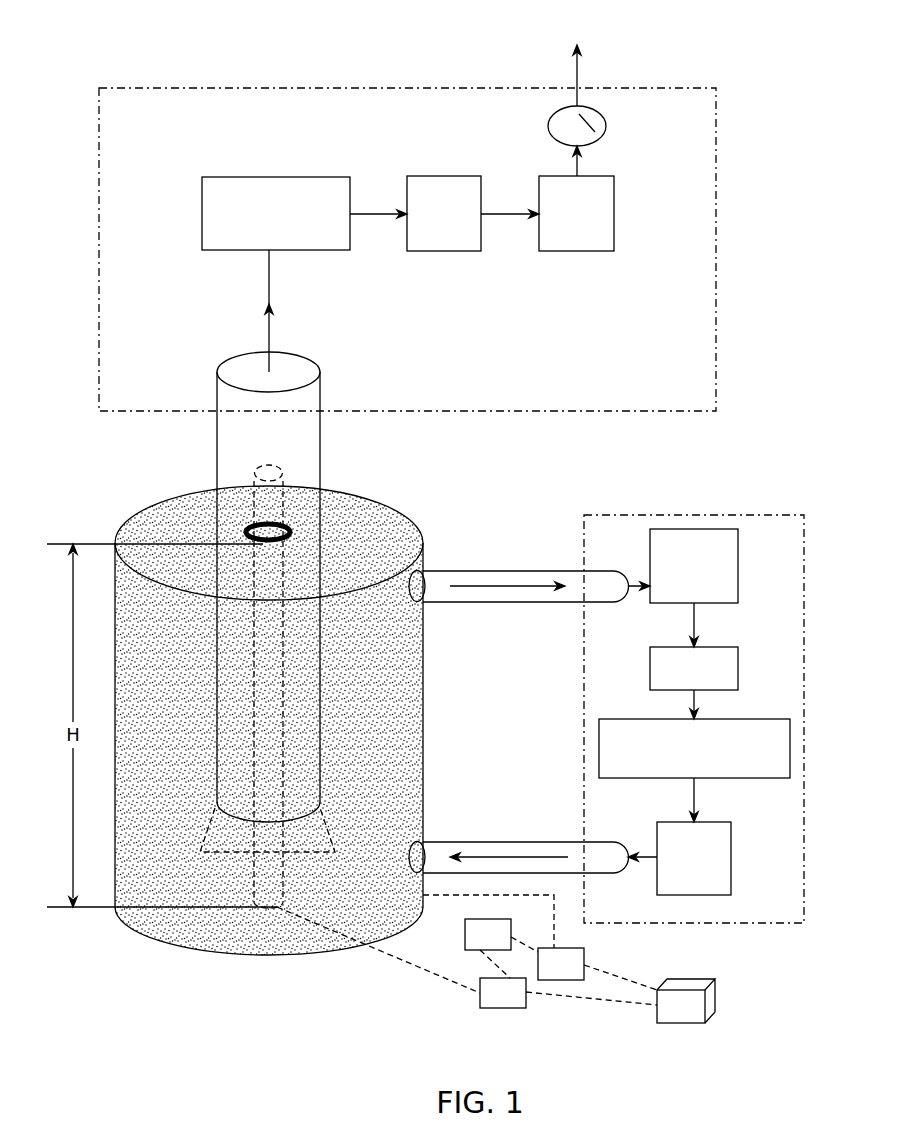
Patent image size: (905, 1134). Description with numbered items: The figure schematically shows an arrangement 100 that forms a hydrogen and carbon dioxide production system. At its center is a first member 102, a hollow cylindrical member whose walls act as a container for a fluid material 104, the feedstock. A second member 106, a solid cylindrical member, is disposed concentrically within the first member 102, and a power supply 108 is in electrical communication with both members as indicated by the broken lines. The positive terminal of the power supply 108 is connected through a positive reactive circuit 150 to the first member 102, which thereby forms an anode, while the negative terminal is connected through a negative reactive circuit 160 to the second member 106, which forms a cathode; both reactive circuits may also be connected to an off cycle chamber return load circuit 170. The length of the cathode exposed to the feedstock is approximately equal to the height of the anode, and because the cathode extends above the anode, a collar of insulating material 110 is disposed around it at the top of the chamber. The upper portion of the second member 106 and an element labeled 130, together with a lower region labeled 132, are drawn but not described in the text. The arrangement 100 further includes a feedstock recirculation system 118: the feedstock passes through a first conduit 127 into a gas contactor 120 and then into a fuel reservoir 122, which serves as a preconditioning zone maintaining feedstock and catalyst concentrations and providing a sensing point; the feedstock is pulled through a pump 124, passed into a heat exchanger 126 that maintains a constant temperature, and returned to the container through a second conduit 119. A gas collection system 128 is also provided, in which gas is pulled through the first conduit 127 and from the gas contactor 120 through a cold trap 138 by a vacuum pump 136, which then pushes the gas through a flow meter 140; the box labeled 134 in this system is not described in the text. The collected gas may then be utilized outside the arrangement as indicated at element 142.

The arrangement 100 is at (117, 28).
The first member 102 is at (125, 520).
The fluid material 104 is at (389, 531).
The second member 106 is at (283, 470).
The power supply 108 is at (715, 1000).
The insulating material collar 110 is at (290, 522).
The feedstock recirculation system 118 is at (668, 513).
The second conduit 119 is at (507, 842).
The gas contactor 120 is at (722, 528).
The fuel reservoir 122 is at (738, 668).
The pump 124 is at (790, 750).
The heat exchanger 126 is at (731, 888).
The first conduit 127 is at (507, 570).
The gas collection system 128 is at (243, 88).
The inner cylinder / probe housing 130 is at (217, 453).
The bottom intake 132 is at (220, 852).
The sensor module 134 is at (272, 177).
The vacuum pump 136 is at (445, 176).
The cold trap 138 is at (614, 213).
The flow meter 140 is at (549, 130).
The gas utilization element 142 is at (585, 52).
The positive reactive circuit 150 is at (584, 960).
The negative reactive circuit 160 is at (500, 1010).
The off cycle chamber return load circuit 170 is at (465, 935).